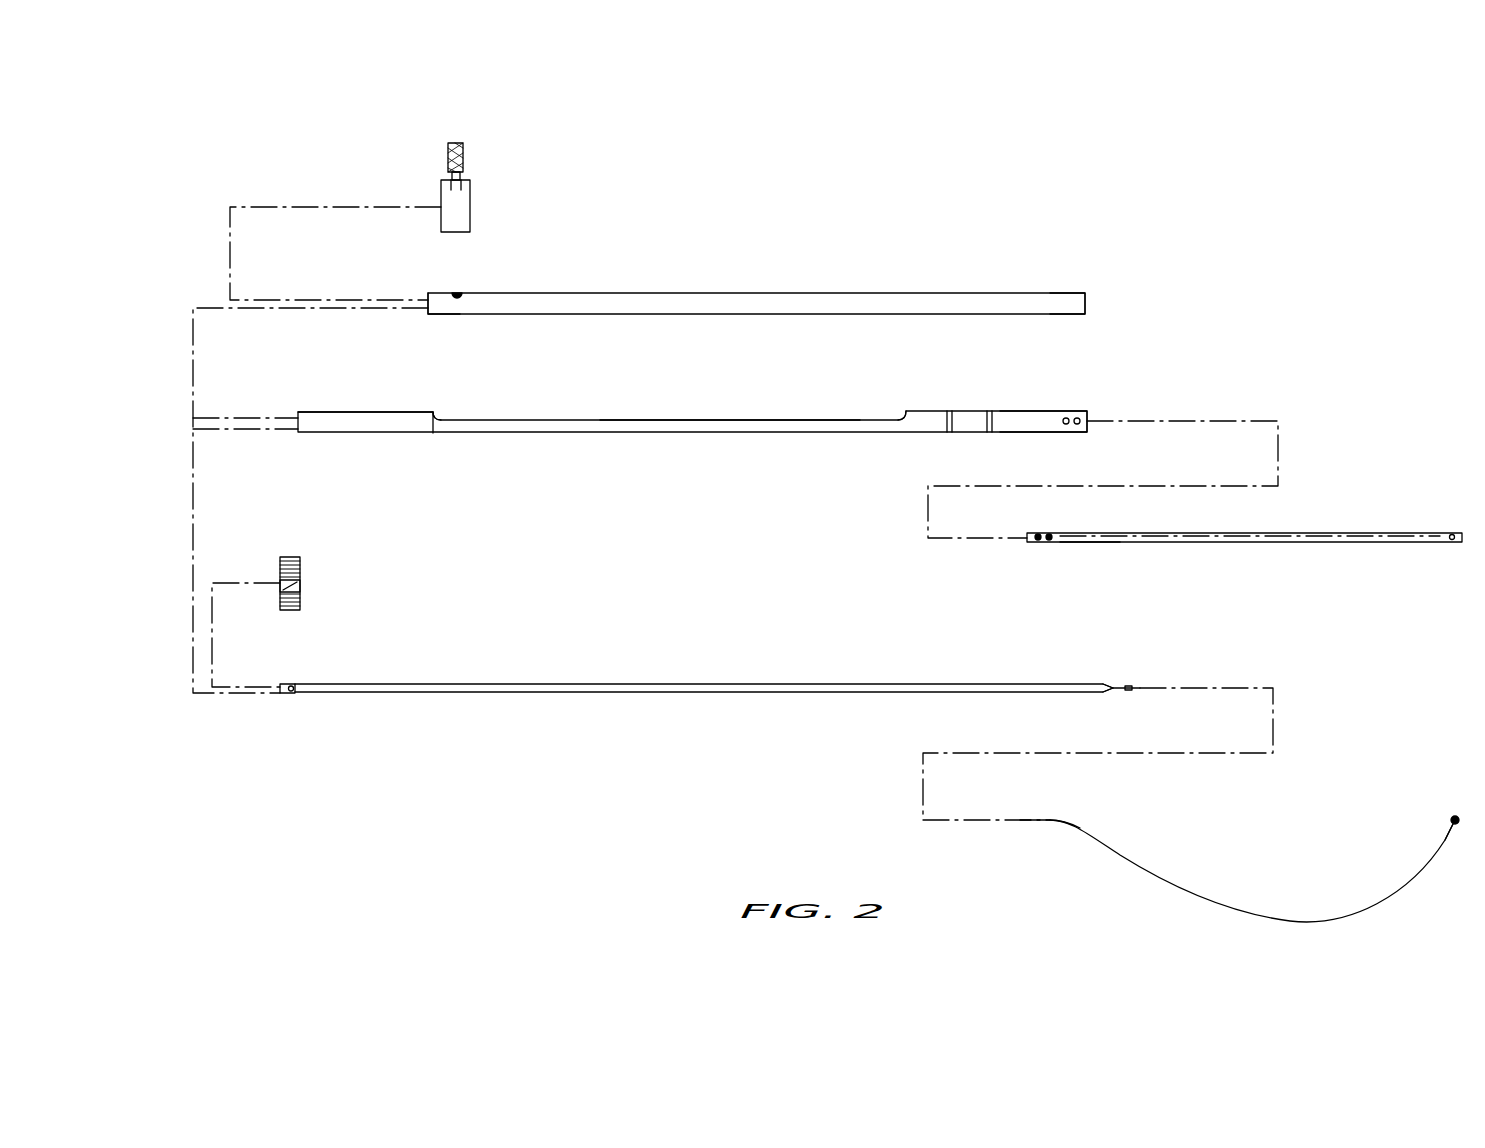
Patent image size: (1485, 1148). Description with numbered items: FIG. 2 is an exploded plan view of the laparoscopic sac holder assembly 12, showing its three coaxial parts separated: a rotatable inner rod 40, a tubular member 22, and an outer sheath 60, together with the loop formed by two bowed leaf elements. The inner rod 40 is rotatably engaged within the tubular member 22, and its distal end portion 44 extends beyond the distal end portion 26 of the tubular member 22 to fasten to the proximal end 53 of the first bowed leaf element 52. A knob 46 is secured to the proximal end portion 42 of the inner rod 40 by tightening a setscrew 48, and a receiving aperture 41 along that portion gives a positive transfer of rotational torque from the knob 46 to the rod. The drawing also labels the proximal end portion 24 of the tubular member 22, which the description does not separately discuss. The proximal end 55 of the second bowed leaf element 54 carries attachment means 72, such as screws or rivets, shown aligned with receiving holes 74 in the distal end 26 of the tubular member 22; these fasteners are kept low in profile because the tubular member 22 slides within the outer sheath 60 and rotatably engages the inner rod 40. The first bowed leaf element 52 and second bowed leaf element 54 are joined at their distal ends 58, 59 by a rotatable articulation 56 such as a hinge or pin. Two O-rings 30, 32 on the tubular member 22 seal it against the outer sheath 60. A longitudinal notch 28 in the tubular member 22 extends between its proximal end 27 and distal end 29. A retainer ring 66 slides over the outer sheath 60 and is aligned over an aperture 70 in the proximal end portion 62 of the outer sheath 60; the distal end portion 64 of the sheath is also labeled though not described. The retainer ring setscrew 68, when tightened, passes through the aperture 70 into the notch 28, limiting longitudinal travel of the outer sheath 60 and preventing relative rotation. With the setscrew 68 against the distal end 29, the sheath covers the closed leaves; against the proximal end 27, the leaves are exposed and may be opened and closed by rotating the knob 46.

The laparoscopic sac holder assembly 12 is at (1001, 198).
The tubular member 22 is at (773, 427).
The proximal hub 24 is at (312, 425).
The distal end portion of tubular member 26 is at (1060, 426).
The proximal end of notch 27 is at (434, 413).
The longitudinal notch 28 is at (733, 418).
The distal end of notch 29 is at (910, 413).
The O-ring 30 is at (949, 412).
The O-ring 32 is at (991, 412).
The inner rod 40 is at (652, 687).
The receiving aperture 41 is at (293, 695).
The proximal end portion of inner rod 42 is at (302, 683).
The distal end portion of inner rod 44 is at (1085, 688).
The knob 46 is at (300, 562).
The setscrew 48 is at (300, 590).
The first bowed leaf element 52 is at (1177, 887).
The proximal end of first bowed leaf element 53 is at (1050, 820).
The second bowed leaf element 54 is at (1255, 537).
The proximal end of second bowed leaf element 55 is at (1092, 542).
The rotatable articulation 56 is at (1452, 817).
The distal end of first bowed leaf element 58 is at (1452, 837).
The distal end of second bowed leaf element 59 is at (1445, 532).
The outer sheath 60 is at (737, 302).
The proximal end portion of outer sheath 62 is at (440, 305).
The distal end 64 is at (994, 297).
The retainer ring 66 is at (457, 210).
The setscrew 68 is at (464, 150).
The aperture 70 is at (457, 293).
The attachment means 72 is at (1038, 541).
The receiving holes 74 is at (1078, 416).